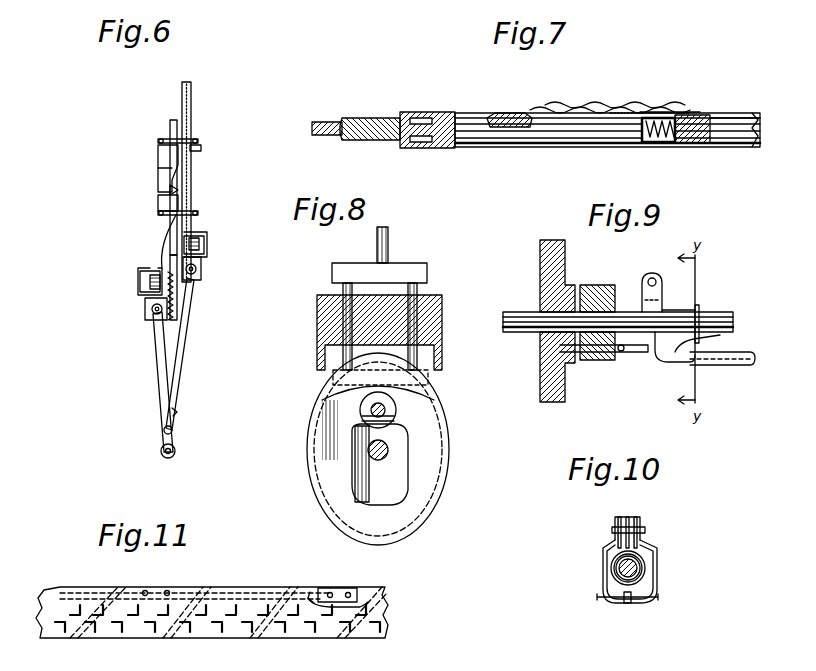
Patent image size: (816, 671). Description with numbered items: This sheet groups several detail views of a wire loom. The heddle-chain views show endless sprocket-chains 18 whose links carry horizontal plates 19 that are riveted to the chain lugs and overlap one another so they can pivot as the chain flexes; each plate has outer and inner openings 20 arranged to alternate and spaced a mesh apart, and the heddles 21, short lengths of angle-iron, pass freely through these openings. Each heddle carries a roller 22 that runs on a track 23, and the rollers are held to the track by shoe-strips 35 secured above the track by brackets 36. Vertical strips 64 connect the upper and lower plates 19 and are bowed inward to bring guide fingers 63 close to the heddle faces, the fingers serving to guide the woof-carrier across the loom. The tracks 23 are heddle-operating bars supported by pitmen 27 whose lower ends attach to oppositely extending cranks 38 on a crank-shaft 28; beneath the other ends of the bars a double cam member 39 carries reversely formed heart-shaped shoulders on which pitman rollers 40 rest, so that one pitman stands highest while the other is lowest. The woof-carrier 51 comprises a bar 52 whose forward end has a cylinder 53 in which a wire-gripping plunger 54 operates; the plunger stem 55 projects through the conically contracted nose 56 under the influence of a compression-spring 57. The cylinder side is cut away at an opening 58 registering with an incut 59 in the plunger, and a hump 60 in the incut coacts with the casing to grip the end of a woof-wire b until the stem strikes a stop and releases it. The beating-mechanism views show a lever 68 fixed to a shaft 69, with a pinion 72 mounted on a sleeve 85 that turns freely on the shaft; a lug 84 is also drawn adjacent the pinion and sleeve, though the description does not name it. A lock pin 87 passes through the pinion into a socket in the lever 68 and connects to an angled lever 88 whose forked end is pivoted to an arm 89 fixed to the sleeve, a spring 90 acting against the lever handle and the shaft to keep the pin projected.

In FIG. 6, the heddle 21 is at (170, 127).
In FIG. 6, the horizontal plate 19 is at (195, 139).
In FIG. 11, the horizontal plate 19 is at (138, 638).
In FIG. 6, the sprocket-chain 18 is at (202, 148).
In FIG. 11, the sprocket-chain 18 is at (314, 596).
In FIG. 6, the vertical strip 64 is at (158, 158).
In FIG. 6, the guide finger 63 is at (170, 190).
In FIG. 6, the shoe-strip 35 is at (202, 236).
In FIG. 6, the bracket 36 is at (206, 248).
In FIG. 6, the roller 22 is at (150, 283).
In FIG. 6, the track section (heddle-operating bar) 23 is at (146, 302).
In FIG. 6, the pitman 27 is at (162, 364).
In FIG. 6, the crank-shaft 28 is at (173, 430).
In FIG. 6, the crank 38 is at (161, 452).
In FIG. 7, the woof-carrier 51 is at (402, 112).
In FIG. 7, the bar 52 is at (740, 114).
In FIG. 7, the cylinder 53 is at (648, 145).
In FIG. 7, the wire-gripping plunger 54 is at (525, 148).
In FIG. 7, the stem 55 is at (322, 136).
In FIG. 7, the conically contracted nose 56 is at (382, 141).
In FIG. 7, the compression-spring 57 is at (678, 143).
In FIG. 7, the cylinder opening 58 is at (630, 112).
In FIG. 7, the incut 59 is at (565, 112).
In FIG. 7, the hump or crimp-shaped elevation 60 is at (513, 114).
In FIG. 7, the woof-wire b is at (652, 110).
In FIG. 8, the double cam member 39 is at (450, 450).
In FIG. 8, the roller 40 is at (386, 411).
In FIG. 9, the lever 68 is at (558, 268).
In FIG. 9, the shaft 69 is at (518, 332).
In FIG. 10, the shaft 69 is at (638, 568).
In FIG. 9, the pinion 72 is at (608, 290).
In FIG. 9, the lug 84 is at (653, 278).
In FIG. 9, the sleeve 85 is at (678, 308).
In FIG. 9, the lock pin 87 is at (600, 360).
In FIG. 9, the angled lever 88 is at (655, 360).
In FIG. 10, the angled lever 88 is at (656, 555).
In FIG. 10, the bracket or arm 89 is at (641, 531).
In FIG. 9, the spring 90 is at (715, 352).
In FIG. 11, the opening 20 is at (245, 622).